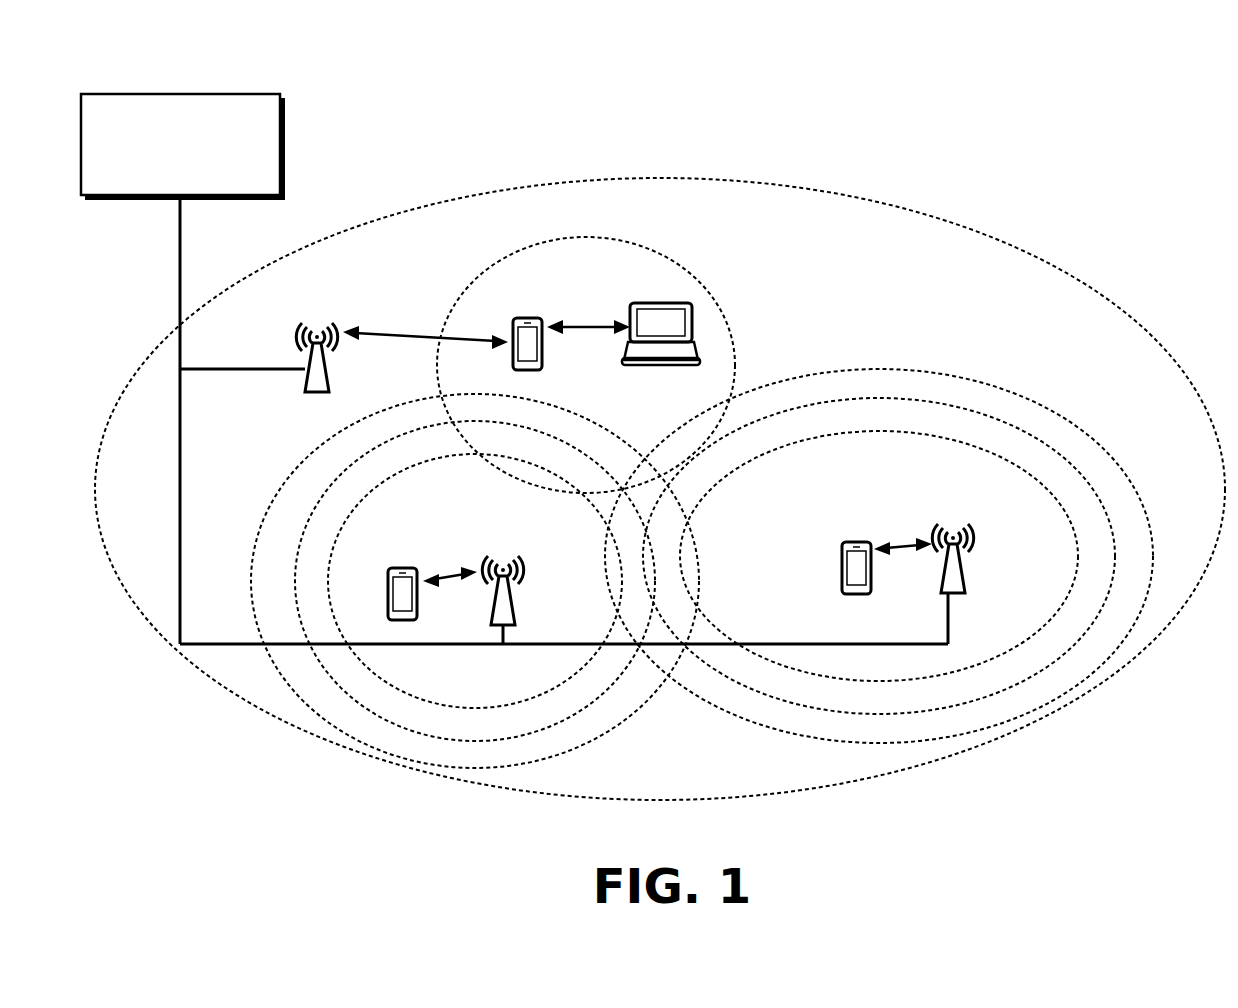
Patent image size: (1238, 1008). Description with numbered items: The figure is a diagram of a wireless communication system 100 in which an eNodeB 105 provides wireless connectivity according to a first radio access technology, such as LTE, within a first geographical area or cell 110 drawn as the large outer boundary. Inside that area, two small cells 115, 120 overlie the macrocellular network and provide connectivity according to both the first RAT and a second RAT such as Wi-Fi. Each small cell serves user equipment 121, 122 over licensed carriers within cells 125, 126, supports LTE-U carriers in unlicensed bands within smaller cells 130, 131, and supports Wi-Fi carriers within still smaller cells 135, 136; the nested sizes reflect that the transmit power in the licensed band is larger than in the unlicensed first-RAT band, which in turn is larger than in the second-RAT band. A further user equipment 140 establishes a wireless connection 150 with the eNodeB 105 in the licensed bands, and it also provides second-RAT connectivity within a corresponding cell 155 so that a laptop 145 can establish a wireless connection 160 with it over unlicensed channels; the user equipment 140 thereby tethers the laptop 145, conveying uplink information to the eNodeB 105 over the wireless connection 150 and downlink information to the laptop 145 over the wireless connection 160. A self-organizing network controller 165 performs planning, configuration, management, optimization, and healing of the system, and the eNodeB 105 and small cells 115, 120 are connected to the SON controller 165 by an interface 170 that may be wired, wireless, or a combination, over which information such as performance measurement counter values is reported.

The wireless communication system 100 is at (1130, 110).
The eNodeB 105 is at (320, 400).
The cell 110 is at (375, 768).
The small cell 115 is at (515, 620).
The small cell 120 is at (965, 580).
The user equipment 121 is at (840, 577).
The user equipment 122 is at (385, 602).
The cell 125 is at (955, 380).
The cell 126 is at (283, 488).
The cell 130 is at (1050, 425).
The cell 131 is at (302, 540).
The cell 135 is at (1050, 493).
The cell 136 is at (328, 590).
The user equipment 140 is at (525, 318).
The laptop 145 is at (660, 367).
The wireless connection 150 is at (402, 334).
The cell 155 is at (730, 322).
The wireless connection 160 is at (603, 332).
The SON controller 165 is at (167, 164).
The interface 170 is at (178, 294).